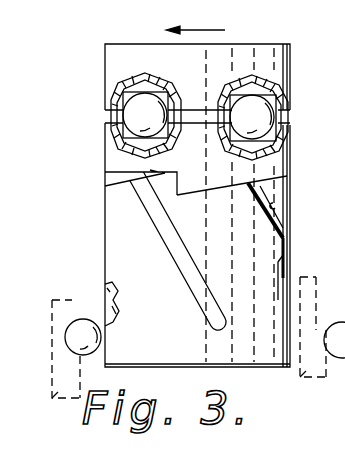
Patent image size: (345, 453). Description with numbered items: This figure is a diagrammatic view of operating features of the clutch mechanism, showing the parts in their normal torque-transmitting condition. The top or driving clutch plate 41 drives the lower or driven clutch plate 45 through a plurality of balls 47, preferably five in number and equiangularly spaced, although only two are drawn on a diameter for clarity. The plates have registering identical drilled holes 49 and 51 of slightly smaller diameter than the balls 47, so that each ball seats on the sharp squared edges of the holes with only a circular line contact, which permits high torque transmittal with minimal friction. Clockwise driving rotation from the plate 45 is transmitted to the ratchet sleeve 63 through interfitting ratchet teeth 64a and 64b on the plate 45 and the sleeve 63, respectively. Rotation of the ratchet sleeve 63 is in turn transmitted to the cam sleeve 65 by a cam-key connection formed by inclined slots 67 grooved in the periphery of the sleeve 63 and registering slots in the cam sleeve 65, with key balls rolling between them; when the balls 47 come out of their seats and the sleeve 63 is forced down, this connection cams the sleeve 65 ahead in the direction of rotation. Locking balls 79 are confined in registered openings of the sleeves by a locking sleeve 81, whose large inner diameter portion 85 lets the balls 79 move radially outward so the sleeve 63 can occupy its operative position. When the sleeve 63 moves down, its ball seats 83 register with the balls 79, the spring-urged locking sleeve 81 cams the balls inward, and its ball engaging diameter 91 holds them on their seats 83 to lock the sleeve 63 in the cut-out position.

The top or driving clutch plate 41 is at (122, 59).
The lower or driven clutch plate 45 is at (290, 146).
The balls 47 is at (272, 118).
The drilled holes 49 is at (281, 107).
The drilled holes 51 is at (292, 131).
The ratchet sleeve 63 is at (284, 246).
The ratchet teeth 64a is at (181, 194).
The ratchet teeth 64b is at (105, 172).
The cam sleeve 65 is at (278, 275).
The slots 67 is at (182, 266).
The locking balls 79 is at (103, 332).
The locking sleeve 81 is at (55, 400).
The ball seats 83 is at (120, 299).
The large inner diameter portion 85 is at (68, 298).
The ball engaging diameter 91 is at (336, 322).